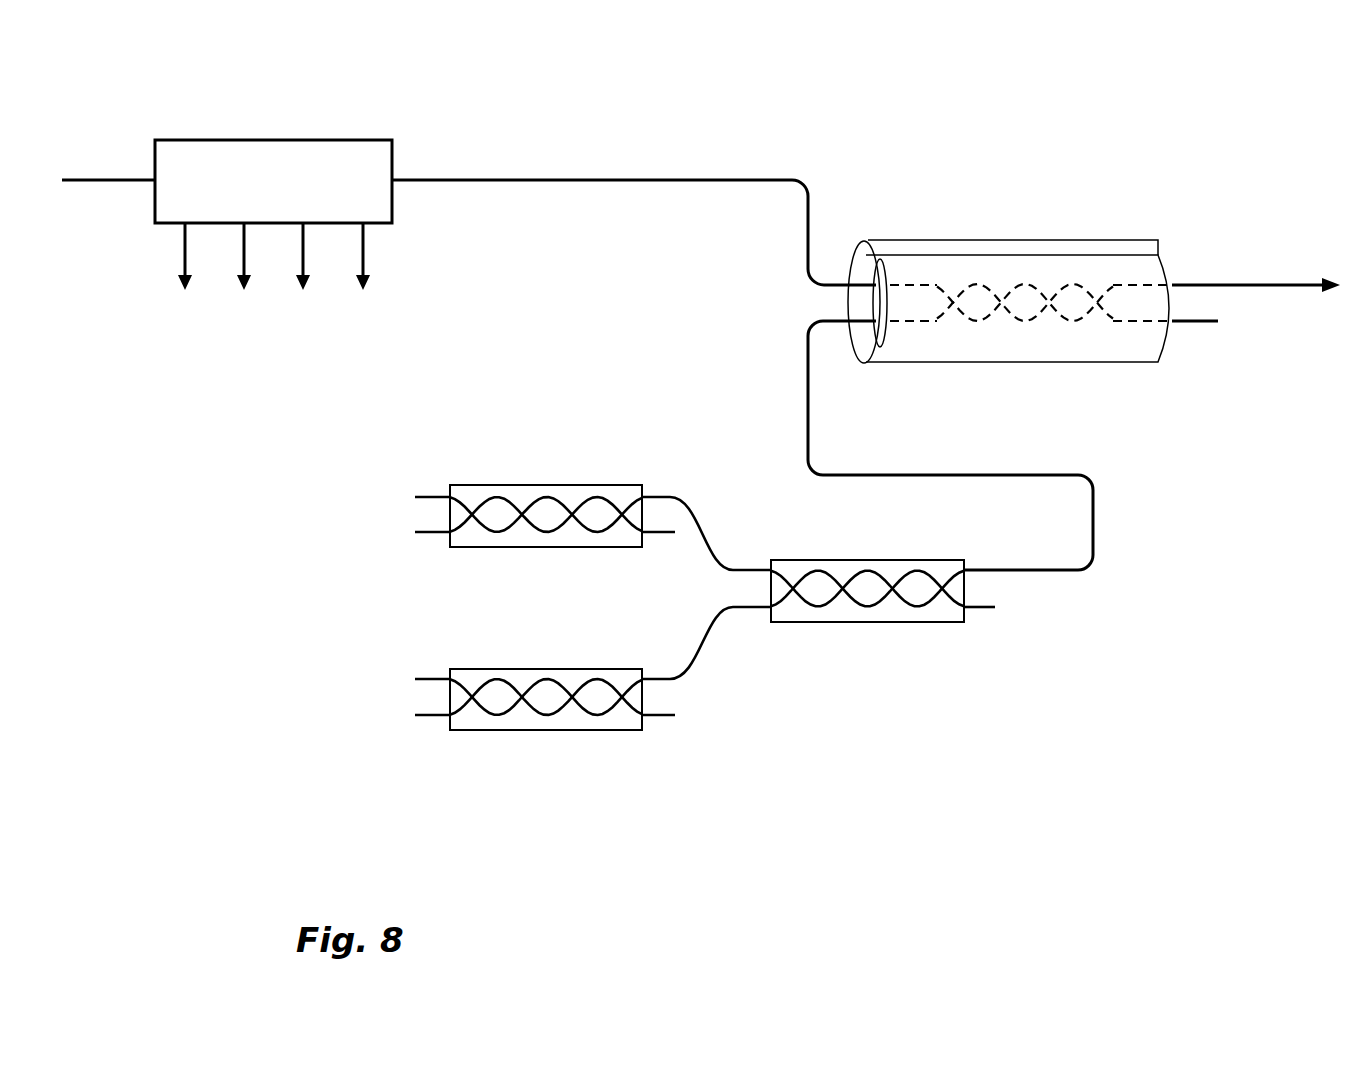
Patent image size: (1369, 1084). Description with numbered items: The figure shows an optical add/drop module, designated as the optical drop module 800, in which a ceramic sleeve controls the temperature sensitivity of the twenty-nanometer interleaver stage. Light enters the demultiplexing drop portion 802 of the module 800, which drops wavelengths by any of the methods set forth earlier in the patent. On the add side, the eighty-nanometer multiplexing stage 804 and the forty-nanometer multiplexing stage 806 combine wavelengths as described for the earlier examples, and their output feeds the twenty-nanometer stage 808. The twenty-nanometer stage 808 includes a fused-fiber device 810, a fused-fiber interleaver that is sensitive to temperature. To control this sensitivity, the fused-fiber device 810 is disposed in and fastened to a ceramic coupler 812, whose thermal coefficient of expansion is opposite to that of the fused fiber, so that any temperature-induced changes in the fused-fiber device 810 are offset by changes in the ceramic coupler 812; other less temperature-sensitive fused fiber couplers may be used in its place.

The optical drop module 800 is at (243, 647).
The demultiplexing drop portion 802 is at (281, 122).
The 80 nm multiplexing stage 804 is at (650, 757).
The 40 nm multiplexing stage 806 is at (979, 757).
The 20 nm stage 808 is at (870, 373).
The fused-fiber device 810 is at (977, 287).
The ceramic coupler 812 is at (1170, 338).